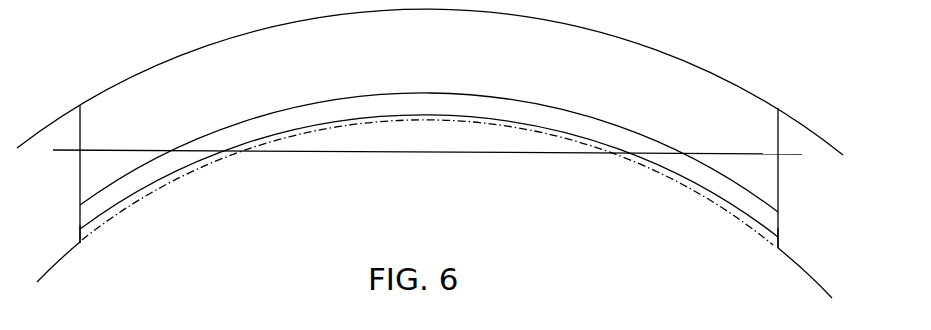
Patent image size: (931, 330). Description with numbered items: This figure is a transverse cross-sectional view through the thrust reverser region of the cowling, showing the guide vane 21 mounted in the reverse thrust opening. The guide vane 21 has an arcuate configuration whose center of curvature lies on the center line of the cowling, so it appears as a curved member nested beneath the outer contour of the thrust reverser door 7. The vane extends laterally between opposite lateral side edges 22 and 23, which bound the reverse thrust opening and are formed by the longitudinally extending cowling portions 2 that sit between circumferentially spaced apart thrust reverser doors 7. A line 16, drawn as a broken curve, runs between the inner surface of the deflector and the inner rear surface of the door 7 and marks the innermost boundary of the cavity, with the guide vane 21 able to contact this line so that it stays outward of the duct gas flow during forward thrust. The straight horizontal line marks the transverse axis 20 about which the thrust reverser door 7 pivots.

The longitudinally extending cowling portions 2 is at (810, 183).
The thrust reverser door 7 is at (170, 98).
The line 16 is at (429, 122).
The transverse axis 20 is at (477, 153).
The guide vane 21 is at (314, 114).
The lateral side edge 22 is at (84, 222).
The lateral side edge 23 is at (776, 225).